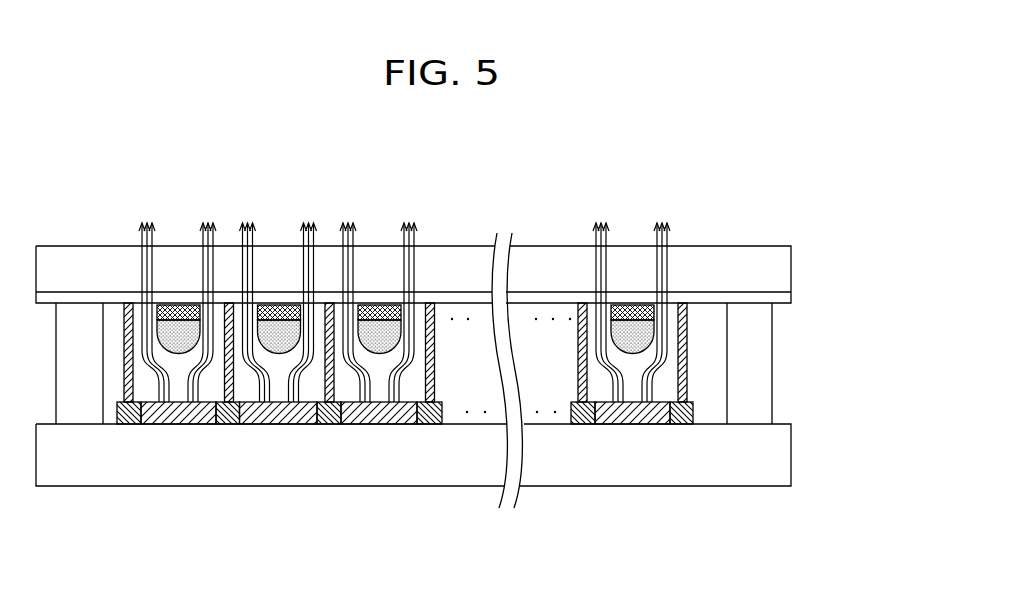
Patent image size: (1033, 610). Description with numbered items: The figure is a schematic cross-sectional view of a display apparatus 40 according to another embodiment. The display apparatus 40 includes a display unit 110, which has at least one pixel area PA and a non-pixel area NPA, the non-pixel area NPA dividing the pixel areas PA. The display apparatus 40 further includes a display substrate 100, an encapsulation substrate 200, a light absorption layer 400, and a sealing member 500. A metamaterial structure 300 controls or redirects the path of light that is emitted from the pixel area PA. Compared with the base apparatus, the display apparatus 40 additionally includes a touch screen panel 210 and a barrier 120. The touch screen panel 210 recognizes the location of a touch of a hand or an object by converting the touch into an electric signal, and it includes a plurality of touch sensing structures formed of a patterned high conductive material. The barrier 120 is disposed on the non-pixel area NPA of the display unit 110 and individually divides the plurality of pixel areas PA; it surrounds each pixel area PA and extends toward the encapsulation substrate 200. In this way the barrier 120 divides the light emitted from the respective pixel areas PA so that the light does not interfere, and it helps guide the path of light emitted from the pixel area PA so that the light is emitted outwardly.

The display apparatus 40 is at (774, 217).
The display substrate 100 is at (791, 453).
The display unit 110 is at (240, 537).
The barrier 120 is at (573, 328).
The encapsulation substrate 200 is at (791, 268).
The touch screen panel 210 is at (791, 297).
The metamaterial structure 300 is at (640, 338).
The light absorption layer 400 is at (654, 315).
The sealing member 500 is at (768, 390).
The pixel area PA is at (177, 403).
The non-pixel area NPA is at (228, 403).